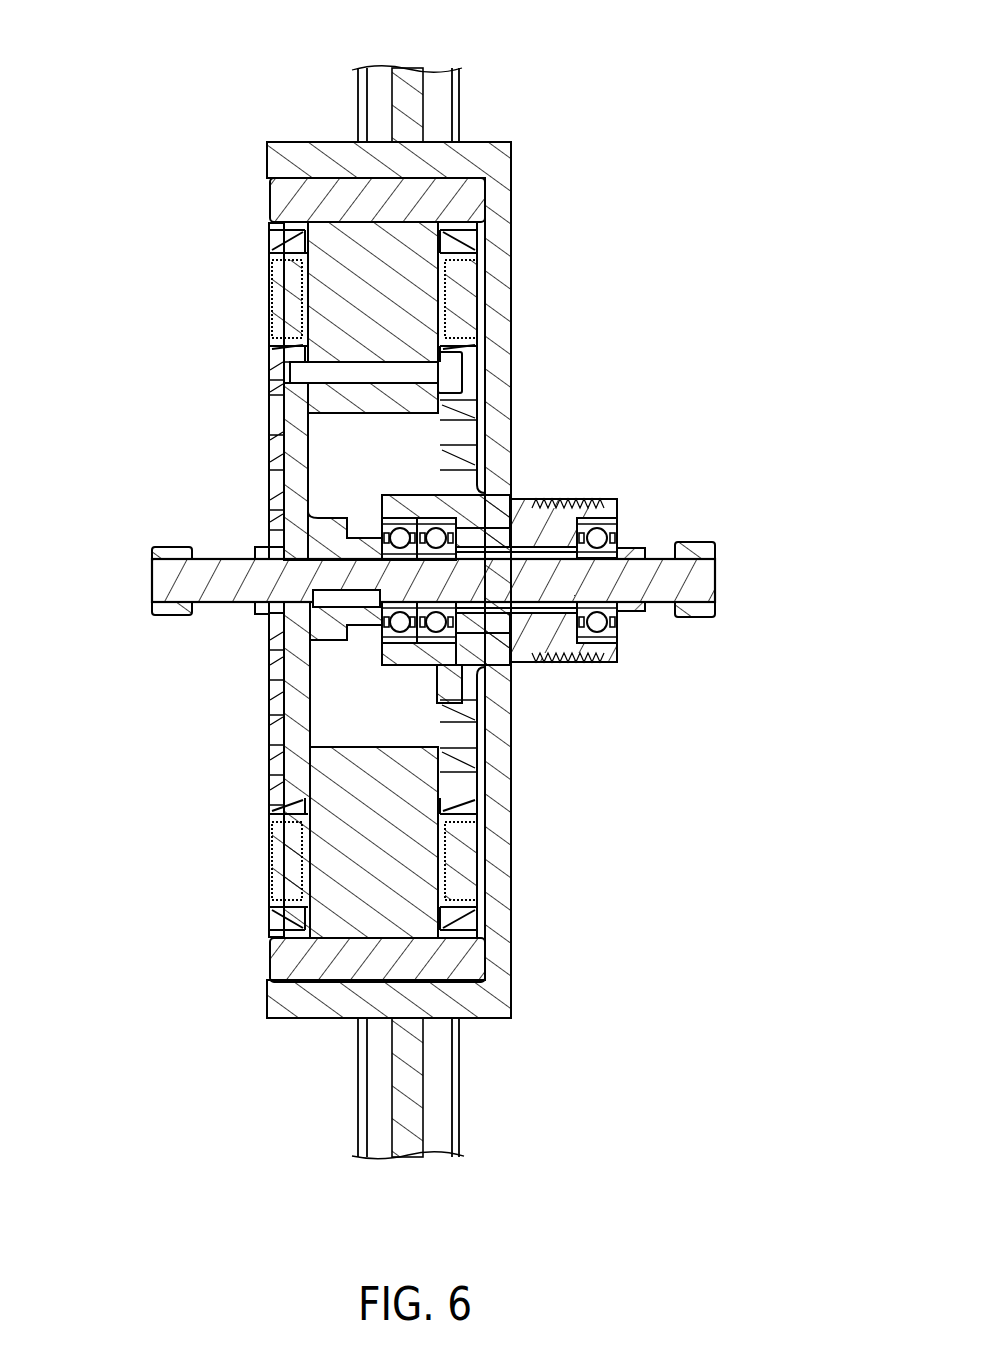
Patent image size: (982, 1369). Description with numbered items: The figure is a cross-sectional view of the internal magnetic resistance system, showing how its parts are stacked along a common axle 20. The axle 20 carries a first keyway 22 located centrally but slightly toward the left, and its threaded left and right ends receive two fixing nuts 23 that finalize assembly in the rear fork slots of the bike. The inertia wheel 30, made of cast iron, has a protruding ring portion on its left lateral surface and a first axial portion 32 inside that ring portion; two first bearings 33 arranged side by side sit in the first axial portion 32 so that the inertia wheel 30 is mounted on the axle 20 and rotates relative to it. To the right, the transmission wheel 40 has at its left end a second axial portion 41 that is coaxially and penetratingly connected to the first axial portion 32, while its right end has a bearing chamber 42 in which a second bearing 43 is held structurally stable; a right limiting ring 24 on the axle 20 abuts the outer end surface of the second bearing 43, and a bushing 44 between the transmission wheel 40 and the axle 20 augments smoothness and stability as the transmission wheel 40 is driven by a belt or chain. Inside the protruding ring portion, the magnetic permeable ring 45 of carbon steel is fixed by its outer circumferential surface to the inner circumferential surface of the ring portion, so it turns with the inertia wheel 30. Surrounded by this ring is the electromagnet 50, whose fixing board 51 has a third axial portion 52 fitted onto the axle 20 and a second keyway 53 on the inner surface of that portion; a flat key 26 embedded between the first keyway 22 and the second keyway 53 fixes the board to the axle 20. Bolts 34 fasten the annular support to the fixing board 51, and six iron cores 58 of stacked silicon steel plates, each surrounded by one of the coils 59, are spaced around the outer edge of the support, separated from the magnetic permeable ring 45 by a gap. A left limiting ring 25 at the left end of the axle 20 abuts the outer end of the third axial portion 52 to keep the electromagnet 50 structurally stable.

The axle 20 is at (415, 513).
The first keyway 22 is at (357, 590).
The fixing nuts 23 is at (172, 550).
The right limiting ring 24 is at (630, 548).
The left limiting ring 25 is at (260, 547).
The flat key 26 is at (268, 675).
The inertia wheel 30 is at (505, 95).
The first axial portion 32 is at (410, 665).
The first bearings 33 is at (440, 513).
The bolts 34 is at (390, 372).
The transmission wheel 40 is at (583, 495).
The second axial portion 41 is at (483, 628).
The bearing chamber 42 is at (622, 636).
The second bearing 43 is at (691, 605).
The bushing 44 is at (535, 610).
The magnetic permeable ring 45 is at (313, 190).
The electromagnet 50 is at (282, 925).
The fixing board 51 is at (300, 532).
The third axial portion 52 is at (318, 548).
The second keyway 53 is at (315, 665).
The iron cores 58 is at (335, 242).
The coils 59 is at (290, 305).